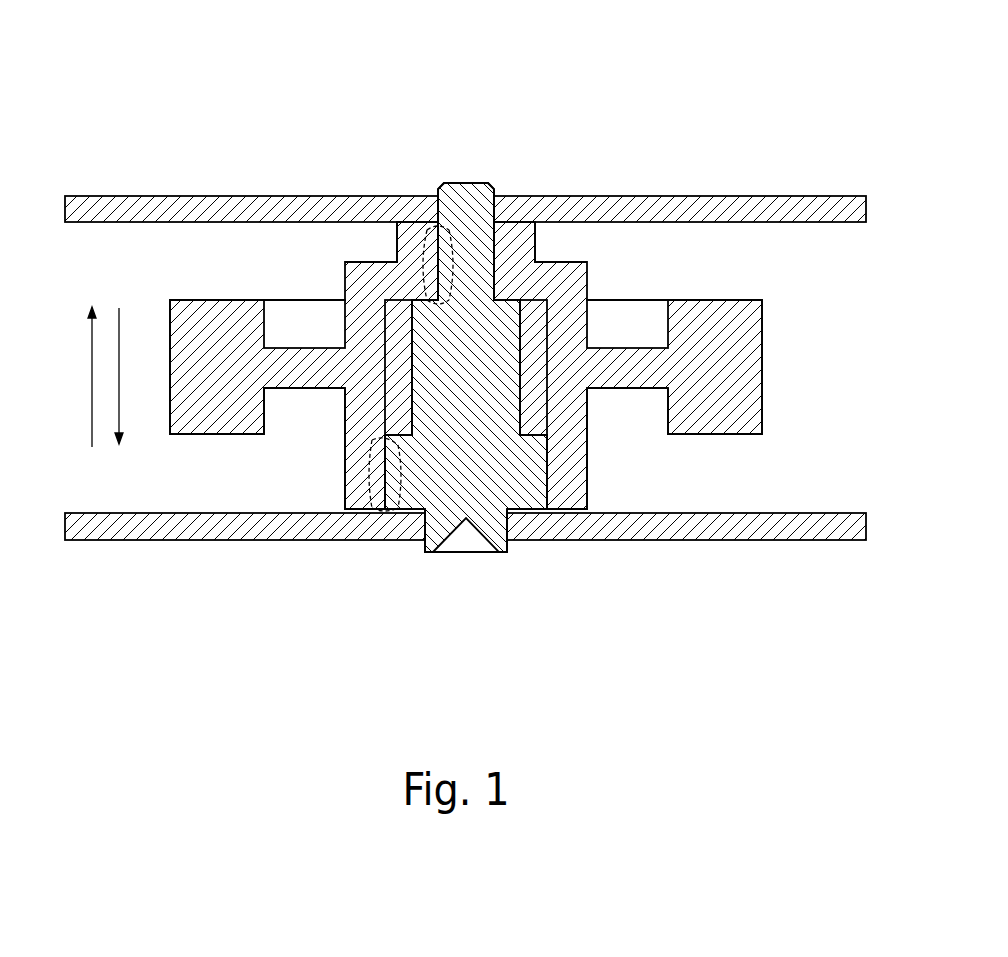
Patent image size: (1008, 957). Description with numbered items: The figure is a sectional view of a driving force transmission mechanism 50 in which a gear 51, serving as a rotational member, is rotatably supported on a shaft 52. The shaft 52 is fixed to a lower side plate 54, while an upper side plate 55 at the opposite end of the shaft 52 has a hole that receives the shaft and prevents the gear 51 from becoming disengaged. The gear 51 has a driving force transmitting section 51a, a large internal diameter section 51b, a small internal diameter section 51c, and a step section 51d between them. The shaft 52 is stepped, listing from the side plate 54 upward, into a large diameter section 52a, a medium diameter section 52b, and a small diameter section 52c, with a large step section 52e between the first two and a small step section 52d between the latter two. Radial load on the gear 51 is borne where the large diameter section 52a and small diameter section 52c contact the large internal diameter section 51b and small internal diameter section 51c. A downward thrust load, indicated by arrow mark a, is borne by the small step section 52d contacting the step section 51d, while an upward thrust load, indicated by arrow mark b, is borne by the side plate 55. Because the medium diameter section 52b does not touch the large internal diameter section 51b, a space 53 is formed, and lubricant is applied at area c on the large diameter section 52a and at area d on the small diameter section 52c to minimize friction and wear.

The driving force transmission mechanism 50 is at (524, 332).
The gear 51 is at (762, 327).
The driving force transmitting section 51a is at (743, 378).
The large internal diameter section 51b is at (568, 495).
The small internal diameter section 51c is at (518, 232).
The step section 51d is at (515, 297).
The shaft 52 is at (455, 183).
The large diameter section 52a is at (437, 472).
The medium diameter section 52b is at (420, 400).
The small diameter section 52c is at (468, 190).
The small step section 52d is at (417, 313).
The large step section 52e is at (532, 440).
The space 53 is at (538, 352).
The side plate 54 is at (193, 528).
The side plate 55 is at (218, 208).
The arrow mark a is at (128, 376).
The arrow mark b is at (83, 377).
The area c is at (365, 494).
The area d is at (423, 277).